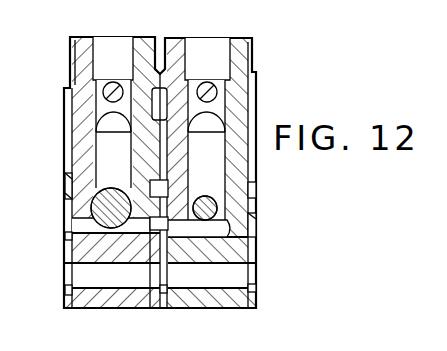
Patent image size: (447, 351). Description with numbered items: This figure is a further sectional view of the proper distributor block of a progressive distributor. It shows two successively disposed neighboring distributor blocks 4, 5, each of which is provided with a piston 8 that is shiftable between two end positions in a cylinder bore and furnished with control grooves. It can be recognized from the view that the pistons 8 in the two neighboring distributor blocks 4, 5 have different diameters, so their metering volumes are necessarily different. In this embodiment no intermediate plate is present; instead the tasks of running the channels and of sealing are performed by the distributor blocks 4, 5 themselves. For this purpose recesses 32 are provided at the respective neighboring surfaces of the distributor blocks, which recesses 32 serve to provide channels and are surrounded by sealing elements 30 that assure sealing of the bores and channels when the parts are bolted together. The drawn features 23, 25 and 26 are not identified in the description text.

The distributor block 4 is at (257, 297).
The distributor block 5 is at (88, 308).
The piston 8 is at (100, 207).
The retaining rings 23 is at (72, 227).
The first socket opening 25 is at (110, 50).
The second socket opening 26 is at (205, 58).
The sealing element 30 is at (68, 175).
The recess 32 is at (150, 188).